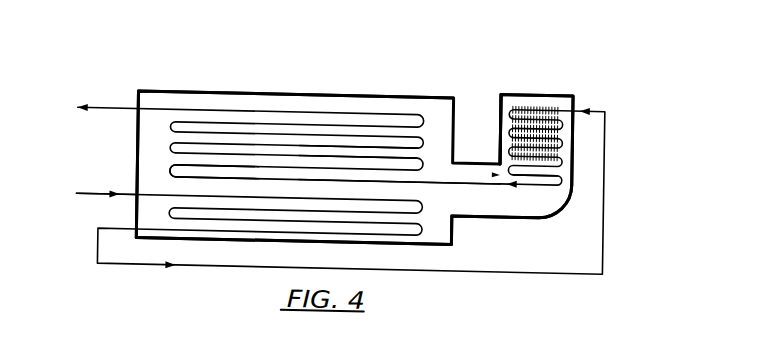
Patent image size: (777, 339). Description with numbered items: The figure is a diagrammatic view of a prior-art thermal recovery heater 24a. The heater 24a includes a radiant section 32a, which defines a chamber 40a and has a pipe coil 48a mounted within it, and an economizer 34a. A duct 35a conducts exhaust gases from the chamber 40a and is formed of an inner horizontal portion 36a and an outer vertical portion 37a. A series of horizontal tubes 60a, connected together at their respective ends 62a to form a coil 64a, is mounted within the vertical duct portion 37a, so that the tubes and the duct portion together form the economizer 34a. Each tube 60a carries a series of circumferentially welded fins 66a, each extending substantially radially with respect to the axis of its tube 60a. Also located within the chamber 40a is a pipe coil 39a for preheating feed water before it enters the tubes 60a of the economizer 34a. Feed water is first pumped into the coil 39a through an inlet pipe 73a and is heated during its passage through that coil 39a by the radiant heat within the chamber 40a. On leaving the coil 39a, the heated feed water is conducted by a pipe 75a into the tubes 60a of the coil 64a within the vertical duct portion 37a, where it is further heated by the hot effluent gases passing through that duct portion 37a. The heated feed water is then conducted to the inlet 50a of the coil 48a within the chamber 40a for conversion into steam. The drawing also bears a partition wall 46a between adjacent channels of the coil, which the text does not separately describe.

The heater 24a is at (374, 50).
The radiant section 32a is at (245, 90).
The economizer 34a is at (543, 86).
The duct 35a is at (498, 105).
The inner horizontal portion 36a is at (468, 210).
The outer vertical portion 37a is at (499, 137).
The pipe coil 39a is at (303, 238).
The chamber 40a is at (432, 127).
The partition wall 46a is at (331, 152).
The pipe coil 48a is at (169, 172).
The inlet 50a is at (441, 177).
The horizontal tubes 60a is at (544, 140).
The ends 62a is at (546, 177).
The coil 64a is at (494, 167).
The fins 66a is at (541, 102).
The inlet pipe 73a is at (101, 196).
The pipe 75a is at (268, 265).